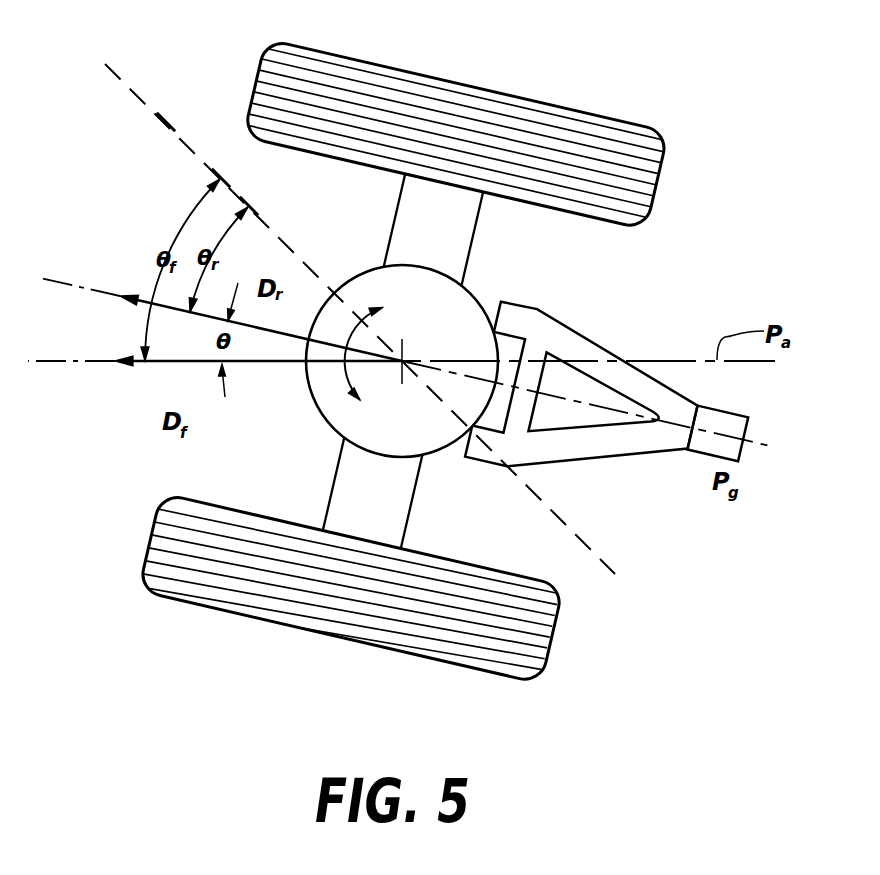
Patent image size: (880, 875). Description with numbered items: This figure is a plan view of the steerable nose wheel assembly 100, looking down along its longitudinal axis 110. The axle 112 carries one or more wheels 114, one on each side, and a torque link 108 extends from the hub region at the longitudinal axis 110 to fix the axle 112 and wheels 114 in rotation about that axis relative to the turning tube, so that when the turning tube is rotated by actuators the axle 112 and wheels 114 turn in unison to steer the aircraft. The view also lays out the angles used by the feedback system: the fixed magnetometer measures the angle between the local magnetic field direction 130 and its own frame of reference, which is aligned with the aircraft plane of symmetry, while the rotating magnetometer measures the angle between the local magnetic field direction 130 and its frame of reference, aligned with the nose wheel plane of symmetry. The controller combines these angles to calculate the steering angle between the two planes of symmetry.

The steerable nose wheel assembly 100 is at (705, 263).
The torque link 108 is at (603, 448).
The longitudinal axis 110 is at (401, 366).
The axle 112 is at (465, 237).
The wheels 114 is at (470, 100).
The local magnetic field direction 130 is at (163, 123).